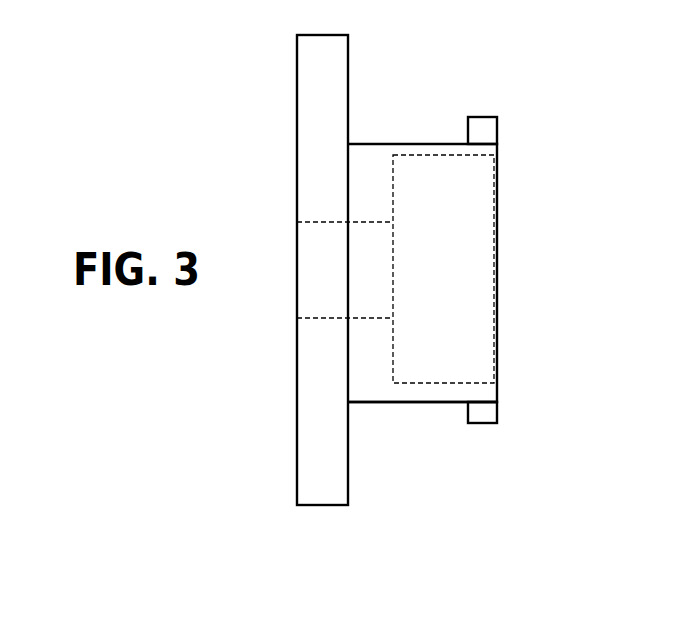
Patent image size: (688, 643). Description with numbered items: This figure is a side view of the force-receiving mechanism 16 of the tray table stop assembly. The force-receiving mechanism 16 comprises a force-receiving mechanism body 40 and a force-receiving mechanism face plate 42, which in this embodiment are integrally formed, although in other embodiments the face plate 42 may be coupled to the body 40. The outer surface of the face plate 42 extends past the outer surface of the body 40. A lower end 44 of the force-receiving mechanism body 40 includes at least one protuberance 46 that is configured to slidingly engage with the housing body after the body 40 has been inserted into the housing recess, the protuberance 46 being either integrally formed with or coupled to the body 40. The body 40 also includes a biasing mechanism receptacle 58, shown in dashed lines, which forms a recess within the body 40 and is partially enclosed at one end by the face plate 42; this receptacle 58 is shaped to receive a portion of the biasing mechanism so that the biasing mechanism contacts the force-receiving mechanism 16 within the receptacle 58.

The force-receiving mechanism 16 is at (238, 88).
The force-receiving mechanism body 40 is at (382, 403).
The force-receiving mechanism face plate 42 is at (297, 425).
The lower end 44 is at (442, 403).
The protuberance 46 is at (483, 117).
The biasing mechanism receptacle 58 is at (427, 155).